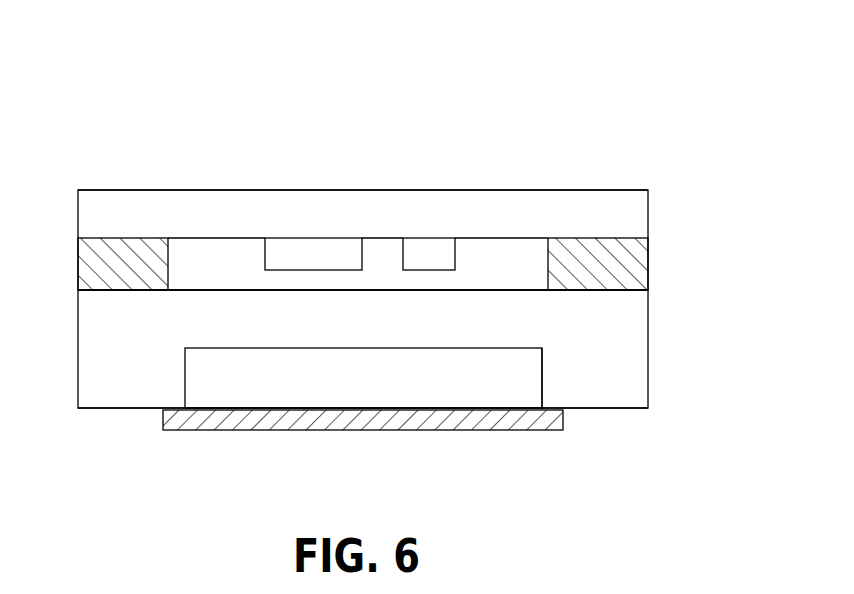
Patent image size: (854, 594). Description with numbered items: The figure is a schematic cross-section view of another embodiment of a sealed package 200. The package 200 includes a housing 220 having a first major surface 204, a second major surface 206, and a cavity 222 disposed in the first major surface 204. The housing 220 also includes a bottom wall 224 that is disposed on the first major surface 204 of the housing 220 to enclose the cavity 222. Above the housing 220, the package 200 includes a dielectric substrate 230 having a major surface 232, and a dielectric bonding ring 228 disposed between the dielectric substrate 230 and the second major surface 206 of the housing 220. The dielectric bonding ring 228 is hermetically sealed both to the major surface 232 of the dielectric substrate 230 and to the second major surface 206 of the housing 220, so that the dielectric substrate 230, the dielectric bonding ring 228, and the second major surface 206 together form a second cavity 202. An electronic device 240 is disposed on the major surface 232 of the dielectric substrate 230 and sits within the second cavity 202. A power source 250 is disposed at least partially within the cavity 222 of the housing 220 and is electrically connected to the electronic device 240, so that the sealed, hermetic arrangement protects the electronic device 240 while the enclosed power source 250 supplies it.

The sealed package 200 is at (499, 90).
The second cavity 202 is at (221, 238).
The first major surface 204 is at (138, 409).
The second major surface 206 is at (207, 290).
The housing 220 is at (638, 353).
The cavity 222 is at (570, 384).
The bottom wall 224 is at (476, 431).
The dielectric bonding ring 228 is at (78, 270).
The dielectric substrate 230 is at (490, 190).
The major surface 232 is at (485, 240).
The electronic device 240 is at (423, 210).
The power source 250 is at (370, 393).